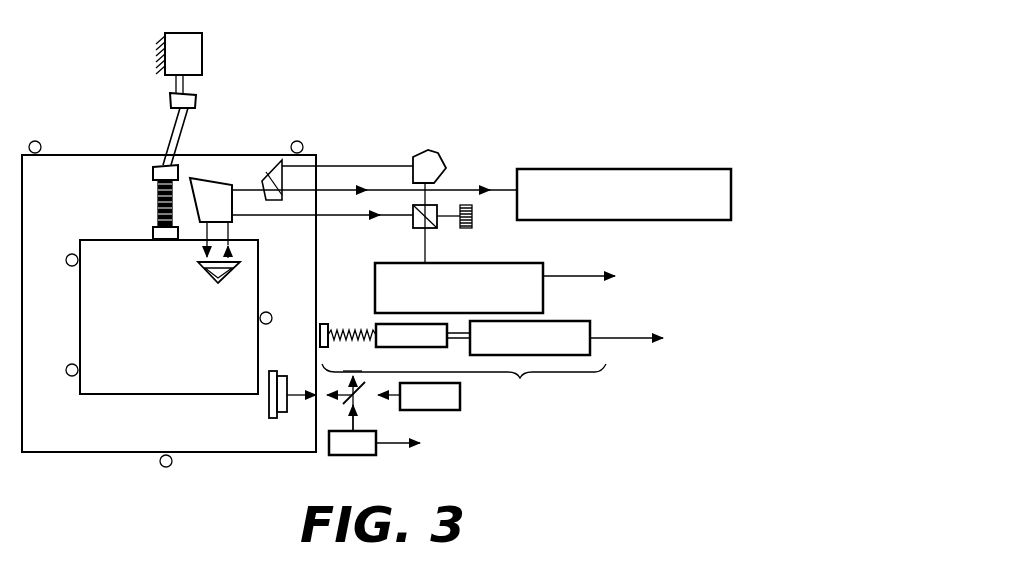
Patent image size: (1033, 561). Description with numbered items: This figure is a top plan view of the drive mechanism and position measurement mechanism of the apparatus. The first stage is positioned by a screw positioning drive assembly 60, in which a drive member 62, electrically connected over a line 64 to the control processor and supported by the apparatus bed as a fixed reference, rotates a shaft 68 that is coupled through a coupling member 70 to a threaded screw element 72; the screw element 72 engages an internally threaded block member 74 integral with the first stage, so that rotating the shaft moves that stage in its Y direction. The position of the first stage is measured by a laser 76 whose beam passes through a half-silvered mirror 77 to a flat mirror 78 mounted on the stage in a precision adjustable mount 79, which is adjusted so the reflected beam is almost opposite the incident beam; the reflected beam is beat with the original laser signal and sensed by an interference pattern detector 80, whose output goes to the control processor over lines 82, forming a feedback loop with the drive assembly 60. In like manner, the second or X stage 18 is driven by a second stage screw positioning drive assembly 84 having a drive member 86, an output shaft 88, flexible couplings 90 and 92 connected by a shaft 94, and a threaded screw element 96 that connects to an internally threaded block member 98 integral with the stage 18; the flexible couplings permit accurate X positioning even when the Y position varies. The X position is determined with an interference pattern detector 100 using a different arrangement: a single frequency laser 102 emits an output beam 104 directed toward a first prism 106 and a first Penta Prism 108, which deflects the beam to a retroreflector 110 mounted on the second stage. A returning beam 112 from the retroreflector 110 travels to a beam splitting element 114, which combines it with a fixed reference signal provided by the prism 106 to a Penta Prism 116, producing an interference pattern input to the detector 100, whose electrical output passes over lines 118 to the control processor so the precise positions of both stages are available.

The second stage 18 is at (90, 240).
The screw positioning drive assembly 60 is at (464, 383).
The drive member 62 is at (530, 338).
The line 64 is at (605, 338).
The shaft 68 is at (458, 340).
The coupling member 70 is at (411, 335).
The threaded screw element 72 is at (365, 347).
The internally threaded block member 74 is at (324, 324).
The laser 76 is at (430, 396).
The half-silvered mirror 77 is at (360, 394).
The flat mirror 78 is at (283, 412).
The precision adjustable mount 79 is at (270, 410).
The interference pattern detector 80 is at (352, 443).
The lines 82 is at (386, 450).
The second stage screw positioning drive assembly 84 is at (120, 45).
The drive member 86 is at (190, 53).
The output shaft 88 is at (184, 84).
The flexible coupling 90 is at (195, 101).
The flexible coupling 92 is at (153, 172).
The shaft 94 is at (183, 133).
The threaded screw element 96 is at (158, 198).
The internally threaded block member 98 is at (153, 233).
The interference pattern detector 100 is at (545, 293).
The single frequency laser 102 is at (632, 169).
The output beam 104 is at (443, 191).
The first prism 106 is at (265, 168).
The first Penta Prism 108 is at (200, 186).
The retroreflector 110 is at (210, 277).
The returning beam 112 is at (228, 232).
The beam splitting element 114 is at (437, 228).
The Penta Prism 116 is at (440, 157).
The lines 118 is at (575, 276).